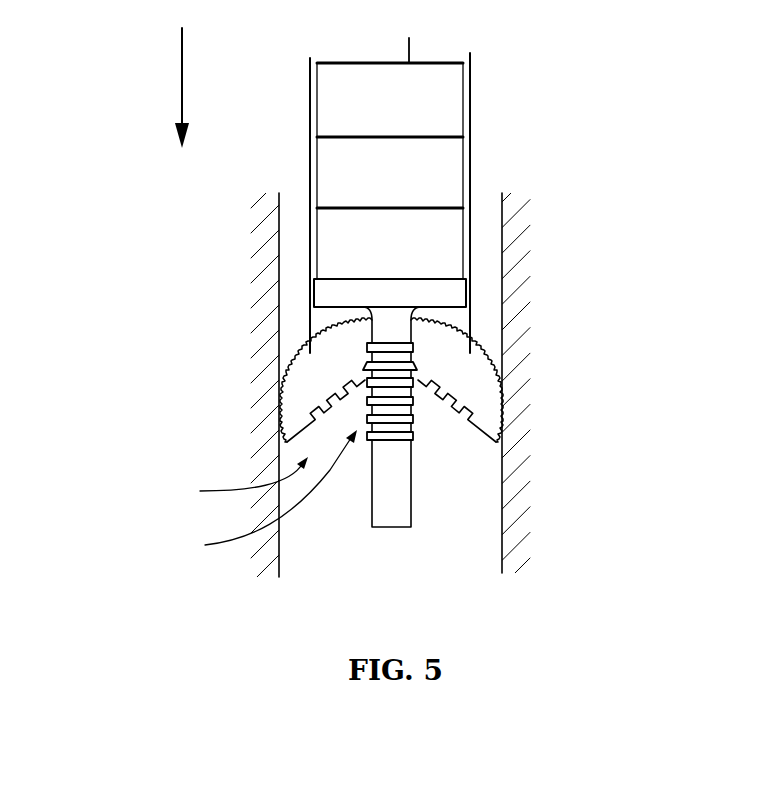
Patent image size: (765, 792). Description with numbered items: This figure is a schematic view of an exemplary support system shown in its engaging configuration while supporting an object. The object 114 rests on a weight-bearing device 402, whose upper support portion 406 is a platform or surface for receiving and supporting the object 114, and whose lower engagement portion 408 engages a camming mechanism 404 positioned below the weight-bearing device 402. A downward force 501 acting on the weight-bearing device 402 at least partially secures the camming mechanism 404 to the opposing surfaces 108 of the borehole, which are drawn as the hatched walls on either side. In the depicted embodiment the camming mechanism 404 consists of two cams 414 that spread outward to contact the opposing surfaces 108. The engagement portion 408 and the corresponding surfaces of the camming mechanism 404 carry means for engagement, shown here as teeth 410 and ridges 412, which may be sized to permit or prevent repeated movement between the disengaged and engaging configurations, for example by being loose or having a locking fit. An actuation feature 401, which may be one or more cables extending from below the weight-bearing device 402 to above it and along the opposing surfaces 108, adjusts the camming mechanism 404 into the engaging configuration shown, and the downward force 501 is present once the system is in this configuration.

The downward force 501 is at (181, 88).
The object 114 is at (450, 115).
The actuation feature 401 is at (472, 180).
The weight-bearing device 402 is at (480, 278).
The support portion 406 is at (325, 293).
The cam 414 is at (297, 367).
The teeth 410 is at (445, 415).
The ridges 412 is at (415, 440).
The camming mechanism 404 is at (234, 480).
The engagement portion 408 is at (259, 494).
The opposing surfaces 108 is at (280, 542).